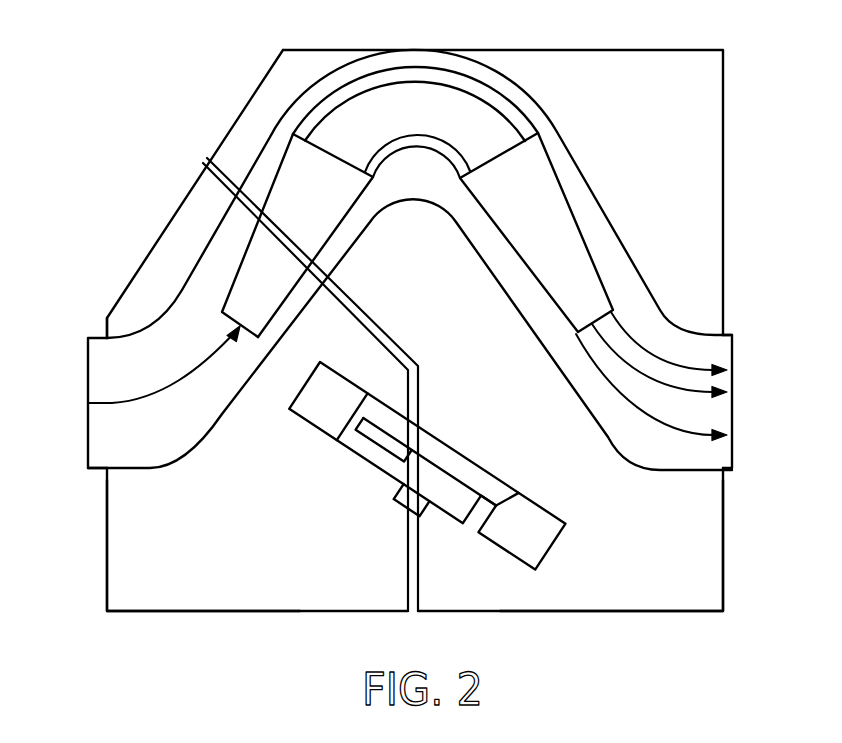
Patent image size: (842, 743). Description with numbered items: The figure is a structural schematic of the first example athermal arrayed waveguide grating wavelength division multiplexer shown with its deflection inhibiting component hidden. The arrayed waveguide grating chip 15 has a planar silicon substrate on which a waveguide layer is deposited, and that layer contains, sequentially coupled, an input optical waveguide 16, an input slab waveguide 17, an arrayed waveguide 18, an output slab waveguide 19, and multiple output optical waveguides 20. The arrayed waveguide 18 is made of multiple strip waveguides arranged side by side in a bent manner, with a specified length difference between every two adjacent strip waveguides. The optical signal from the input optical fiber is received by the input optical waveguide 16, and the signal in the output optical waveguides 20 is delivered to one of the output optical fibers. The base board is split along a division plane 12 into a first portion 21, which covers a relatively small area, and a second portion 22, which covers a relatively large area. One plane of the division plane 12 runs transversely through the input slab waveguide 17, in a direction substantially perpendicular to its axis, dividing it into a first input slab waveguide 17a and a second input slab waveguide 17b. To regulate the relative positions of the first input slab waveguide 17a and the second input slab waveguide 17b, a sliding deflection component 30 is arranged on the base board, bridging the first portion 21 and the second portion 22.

The division plane 12 is at (207, 157).
The arrayed waveguide grating chip 15 is at (290, 67).
The input optical waveguide 16 is at (110, 402).
The input slab waveguide 17 is at (234, 193).
The first input slab waveguide 17a is at (258, 270).
The second input slab waveguide 17b is at (318, 215).
The arrayed waveguide 18 is at (443, 97).
The output slab waveguide 19 is at (543, 198).
The output optical waveguides 20 is at (683, 370).
The first portion 21 is at (127, 547).
The second portion 22 is at (713, 548).
The sliding deflection component 30 is at (437, 453).